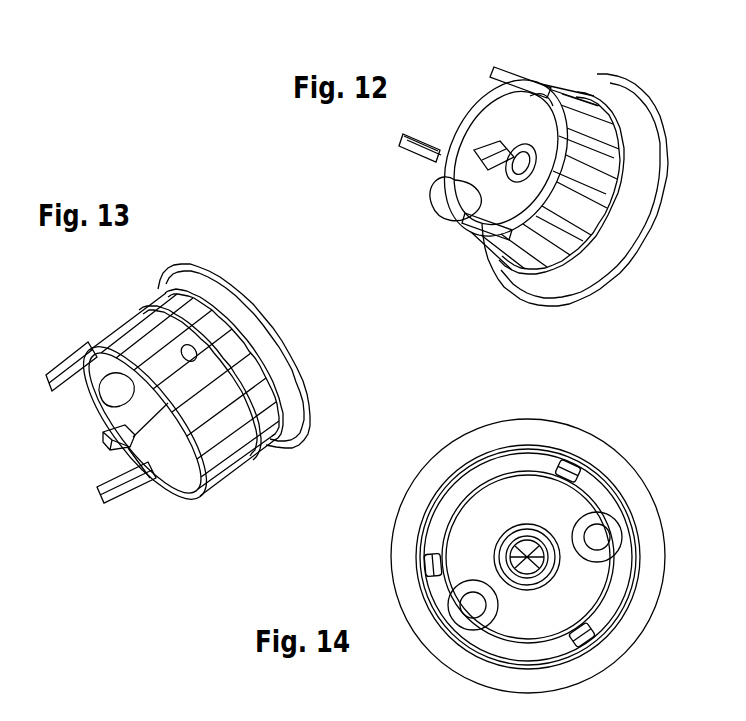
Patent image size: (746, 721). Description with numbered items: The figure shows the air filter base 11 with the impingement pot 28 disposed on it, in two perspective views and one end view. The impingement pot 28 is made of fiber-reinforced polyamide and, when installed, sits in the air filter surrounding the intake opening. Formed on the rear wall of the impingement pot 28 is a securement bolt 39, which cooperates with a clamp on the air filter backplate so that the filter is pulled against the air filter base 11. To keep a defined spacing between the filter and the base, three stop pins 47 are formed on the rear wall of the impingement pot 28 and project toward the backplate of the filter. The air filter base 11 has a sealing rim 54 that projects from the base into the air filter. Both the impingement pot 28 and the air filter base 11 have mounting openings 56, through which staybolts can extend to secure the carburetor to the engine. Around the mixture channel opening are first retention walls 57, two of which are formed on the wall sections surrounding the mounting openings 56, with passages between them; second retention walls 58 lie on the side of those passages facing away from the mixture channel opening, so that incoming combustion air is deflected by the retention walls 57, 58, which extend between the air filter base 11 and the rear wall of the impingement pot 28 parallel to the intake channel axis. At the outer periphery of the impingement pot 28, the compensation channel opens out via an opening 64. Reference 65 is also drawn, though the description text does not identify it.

In FIG. 12, the air filter base 11 is at (580, 286).
In FIG. 13, the air filter base 11 is at (297, 430).
In FIG. 14, the air filter base 11 is at (628, 487).
In FIG. 12, the impingement pot 28 is at (595, 152).
In FIG. 14, the impingement pot 28 is at (473, 472).
In FIG. 12, the securement bolt 39 is at (491, 140).
In FIG. 13, the securement bolt 39 is at (112, 438).
In FIG. 14, the securement bolt 39 is at (523, 535).
In FIG. 12, the stop pins 47 is at (517, 72).
In FIG. 13, the stop pins 47 is at (62, 372).
In FIG. 14, the stop pins 47 is at (570, 466).
In FIG. 12, the sealing rim 54 is at (603, 215).
In FIG. 12, the mounting openings 56 is at (455, 205).
In FIG. 14, the mounting openings 56 is at (603, 533).
In FIG. 13, the first retention walls 57 is at (213, 373).
In FIG. 13, the second retention walls 58 is at (177, 343).
In FIG. 13, the opening 64 is at (194, 356).
In FIG. 12, the prong edge 65 is at (424, 130).